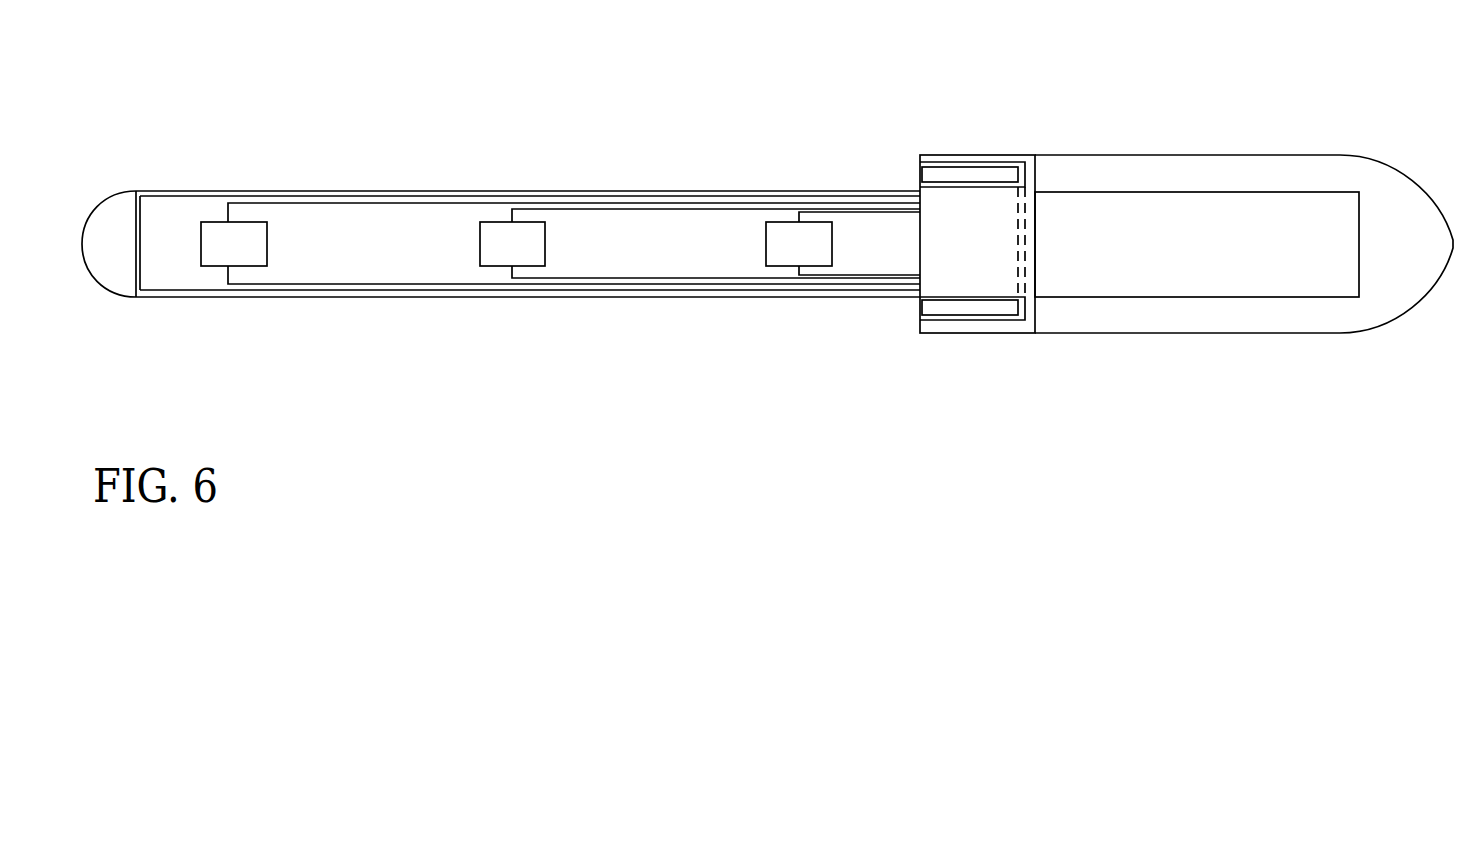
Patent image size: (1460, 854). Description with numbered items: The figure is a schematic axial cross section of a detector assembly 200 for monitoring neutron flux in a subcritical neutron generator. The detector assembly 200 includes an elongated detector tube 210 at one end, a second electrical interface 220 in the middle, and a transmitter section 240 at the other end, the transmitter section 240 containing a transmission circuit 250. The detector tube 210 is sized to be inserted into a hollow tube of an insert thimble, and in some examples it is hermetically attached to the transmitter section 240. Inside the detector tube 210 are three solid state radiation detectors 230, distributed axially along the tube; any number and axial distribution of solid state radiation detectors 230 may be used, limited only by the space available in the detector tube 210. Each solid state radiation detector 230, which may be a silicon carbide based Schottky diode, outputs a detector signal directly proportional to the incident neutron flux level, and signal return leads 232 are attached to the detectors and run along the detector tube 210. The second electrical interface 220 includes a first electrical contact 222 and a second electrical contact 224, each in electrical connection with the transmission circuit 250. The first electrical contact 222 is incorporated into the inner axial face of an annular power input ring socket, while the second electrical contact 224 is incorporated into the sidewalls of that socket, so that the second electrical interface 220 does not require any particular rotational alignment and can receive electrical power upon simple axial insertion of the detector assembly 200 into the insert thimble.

The detector assembly 200 is at (443, 115).
The detector tube 210 is at (173, 298).
The second electrical interface 220 is at (945, 333).
The first electrical contact 222 is at (1020, 308).
The second electrical contact 224 is at (946, 169).
The solid state radiation detector 230 is at (252, 266).
The signal return leads 232 is at (368, 203).
The transmitter section 240 is at (1272, 333).
The transmission circuit 250 is at (1359, 241).